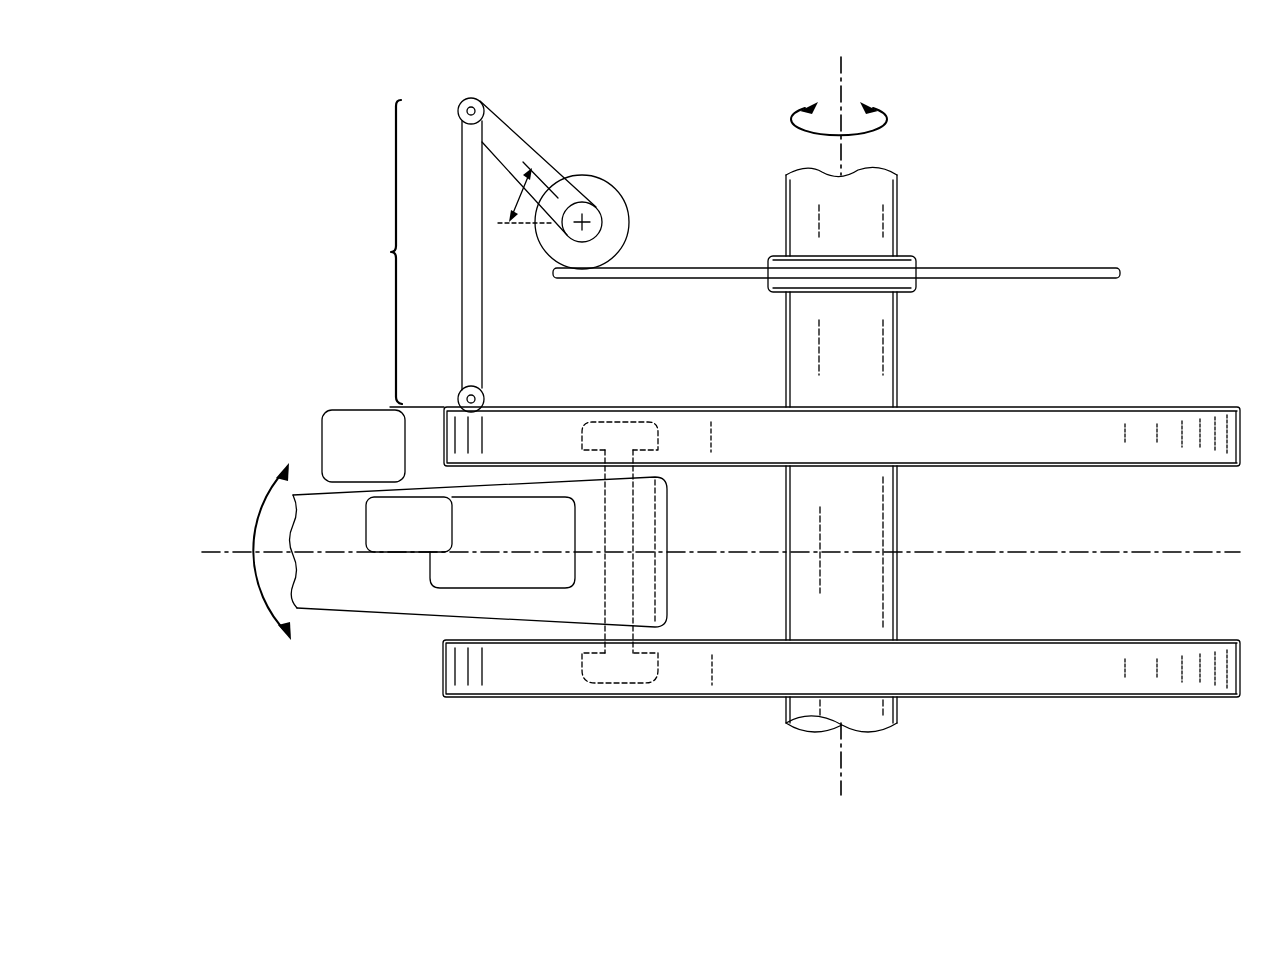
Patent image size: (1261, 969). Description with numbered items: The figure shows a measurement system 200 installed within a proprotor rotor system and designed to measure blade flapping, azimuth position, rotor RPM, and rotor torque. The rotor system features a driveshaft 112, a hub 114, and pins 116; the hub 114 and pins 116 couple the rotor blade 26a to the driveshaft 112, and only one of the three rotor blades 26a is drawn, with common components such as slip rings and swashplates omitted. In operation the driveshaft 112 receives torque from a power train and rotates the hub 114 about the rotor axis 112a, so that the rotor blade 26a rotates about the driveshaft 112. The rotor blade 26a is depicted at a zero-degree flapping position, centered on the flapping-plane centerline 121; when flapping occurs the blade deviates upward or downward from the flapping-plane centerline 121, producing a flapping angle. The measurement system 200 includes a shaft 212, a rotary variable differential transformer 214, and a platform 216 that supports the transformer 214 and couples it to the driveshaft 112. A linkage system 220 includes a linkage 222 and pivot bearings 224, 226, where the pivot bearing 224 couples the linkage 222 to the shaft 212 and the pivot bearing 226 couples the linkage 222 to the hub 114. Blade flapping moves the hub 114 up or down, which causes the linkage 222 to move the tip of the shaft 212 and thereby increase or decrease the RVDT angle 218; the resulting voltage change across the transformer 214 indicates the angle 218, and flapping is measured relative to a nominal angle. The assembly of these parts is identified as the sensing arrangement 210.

The measurement system 200 is at (1090, 118).
The driveshaft 112 is at (900, 213).
The rotor axis 112a is at (846, 70).
The hub 114 is at (1081, 406).
The pin 116 is at (625, 420).
The flapping-plane centerline 121 is at (220, 556).
The rotor blade 26a is at (332, 612).
The roller assembly 210 is at (586, 180).
The shaft 212 is at (553, 166).
The rotary variable differential transformer (RVDT) 214 is at (630, 222).
The platform 216 is at (1080, 267).
The RVDT angle 218 is at (513, 192).
The linkage system 220 is at (375, 252).
The linkage 222 is at (484, 316).
The pivot bearing 224 is at (466, 99).
The pivot bearing 226 is at (486, 396).